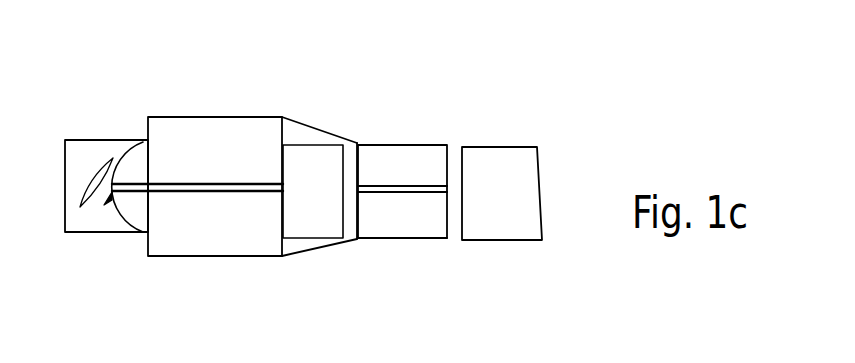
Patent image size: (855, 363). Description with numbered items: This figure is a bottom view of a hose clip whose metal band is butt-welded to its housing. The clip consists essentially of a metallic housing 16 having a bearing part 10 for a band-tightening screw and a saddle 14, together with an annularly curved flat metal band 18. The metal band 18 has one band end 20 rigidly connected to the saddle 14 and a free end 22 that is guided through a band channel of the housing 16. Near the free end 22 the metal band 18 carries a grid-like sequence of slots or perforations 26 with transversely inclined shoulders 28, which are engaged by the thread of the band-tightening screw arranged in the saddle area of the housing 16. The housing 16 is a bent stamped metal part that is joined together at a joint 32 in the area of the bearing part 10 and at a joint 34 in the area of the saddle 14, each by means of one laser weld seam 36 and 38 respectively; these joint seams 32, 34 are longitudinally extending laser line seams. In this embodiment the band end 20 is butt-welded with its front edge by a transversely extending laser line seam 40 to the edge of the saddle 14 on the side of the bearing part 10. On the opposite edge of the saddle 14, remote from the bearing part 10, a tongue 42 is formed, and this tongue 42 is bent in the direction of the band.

The bearing part 10 is at (427, 163).
The saddle 14 is at (235, 135).
The housing 16 is at (438, 244).
The metal band 18 is at (520, 177).
The band end 20 is at (320, 217).
The free end 22 is at (100, 220).
The slots or perforations 26 is at (97, 165).
The transversely inclined shoulders 28 is at (108, 196).
The joint 32 is at (413, 196).
The joint 34 is at (238, 195).
The laser weld seam 36 is at (375, 188).
The laser weld seam 38 is at (183, 182).
The laser line seam 40 is at (285, 163).
The tongue 42 is at (134, 160).